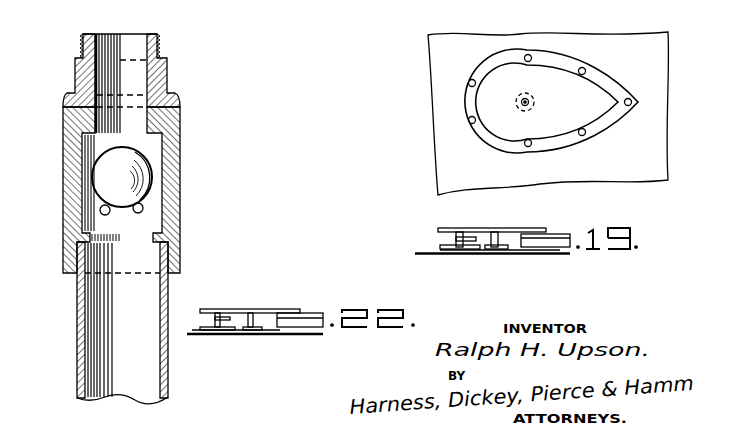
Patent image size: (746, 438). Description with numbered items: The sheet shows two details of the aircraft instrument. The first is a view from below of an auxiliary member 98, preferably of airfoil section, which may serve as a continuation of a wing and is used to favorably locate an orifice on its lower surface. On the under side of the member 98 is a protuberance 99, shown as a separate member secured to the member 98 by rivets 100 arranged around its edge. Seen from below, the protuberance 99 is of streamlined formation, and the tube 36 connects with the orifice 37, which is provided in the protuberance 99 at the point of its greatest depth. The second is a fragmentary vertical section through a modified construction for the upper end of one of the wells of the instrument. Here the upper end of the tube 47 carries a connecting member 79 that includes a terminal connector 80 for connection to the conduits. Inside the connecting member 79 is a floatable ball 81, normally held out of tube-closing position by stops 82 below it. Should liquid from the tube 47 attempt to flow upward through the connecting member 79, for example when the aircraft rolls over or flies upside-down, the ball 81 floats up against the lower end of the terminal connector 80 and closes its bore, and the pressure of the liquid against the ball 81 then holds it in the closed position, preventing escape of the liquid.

In FIG. 22, the terminal connector 80 is at (168, 78).
In FIG. 22, the connecting member 79 is at (181, 193).
In FIG. 22, the floatable ball 81 is at (122, 177).
In FIG. 22, the stops 82 is at (112, 214).
In FIG. 22, the tube 47 is at (76, 305).
In FIG. 19, the auxiliary member 98 is at (433, 66).
In FIG. 19, the protuberance 99 is at (512, 128).
In FIG. 19, the rivets 100 is at (468, 120).
In FIG. 19, the tube 36 is at (533, 92).
In FIG. 19, the orifice 37 is at (530, 104).